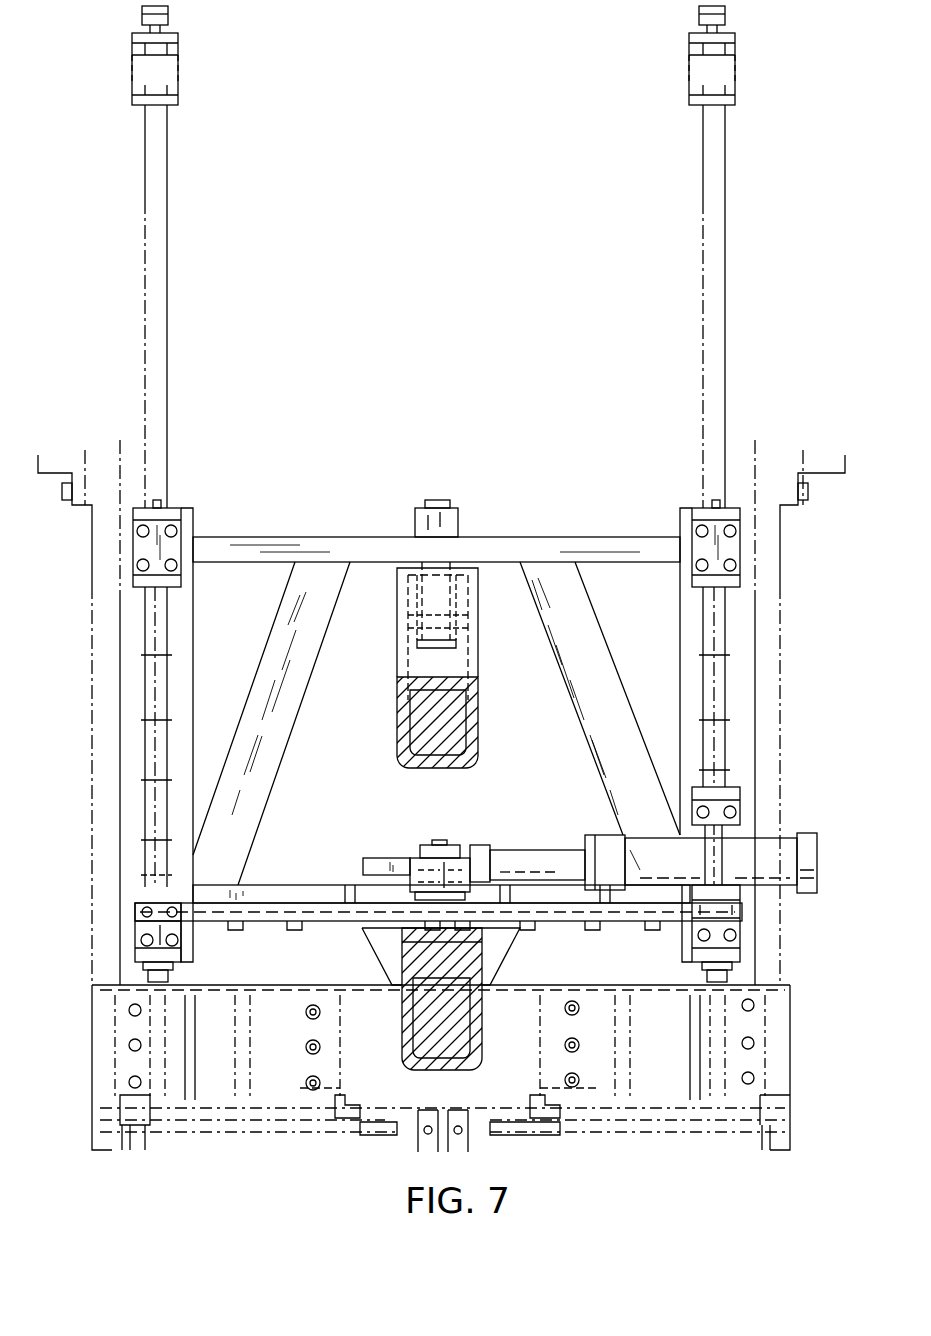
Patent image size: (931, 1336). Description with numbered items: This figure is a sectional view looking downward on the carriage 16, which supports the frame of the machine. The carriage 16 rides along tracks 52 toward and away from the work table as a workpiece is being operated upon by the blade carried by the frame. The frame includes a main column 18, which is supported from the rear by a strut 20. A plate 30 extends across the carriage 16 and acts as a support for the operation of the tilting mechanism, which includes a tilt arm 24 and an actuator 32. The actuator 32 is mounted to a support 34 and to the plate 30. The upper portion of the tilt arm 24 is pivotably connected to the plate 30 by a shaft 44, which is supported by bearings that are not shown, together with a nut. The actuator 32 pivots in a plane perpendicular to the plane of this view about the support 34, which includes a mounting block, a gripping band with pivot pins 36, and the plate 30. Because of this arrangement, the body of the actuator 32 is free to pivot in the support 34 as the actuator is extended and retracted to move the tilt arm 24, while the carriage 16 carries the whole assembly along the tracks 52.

The tracks 52 is at (160, 405).
The carriage 16 is at (547, 528).
The strut 20 is at (477, 655).
The shaft 44 is at (440, 843).
The tilt arm 24 is at (385, 862).
The actuator 32 is at (584, 847).
The support 34 is at (722, 845).
The pivot pins 36 is at (725, 810).
The plate 30 is at (322, 912).
The main column 18 is at (480, 1010).